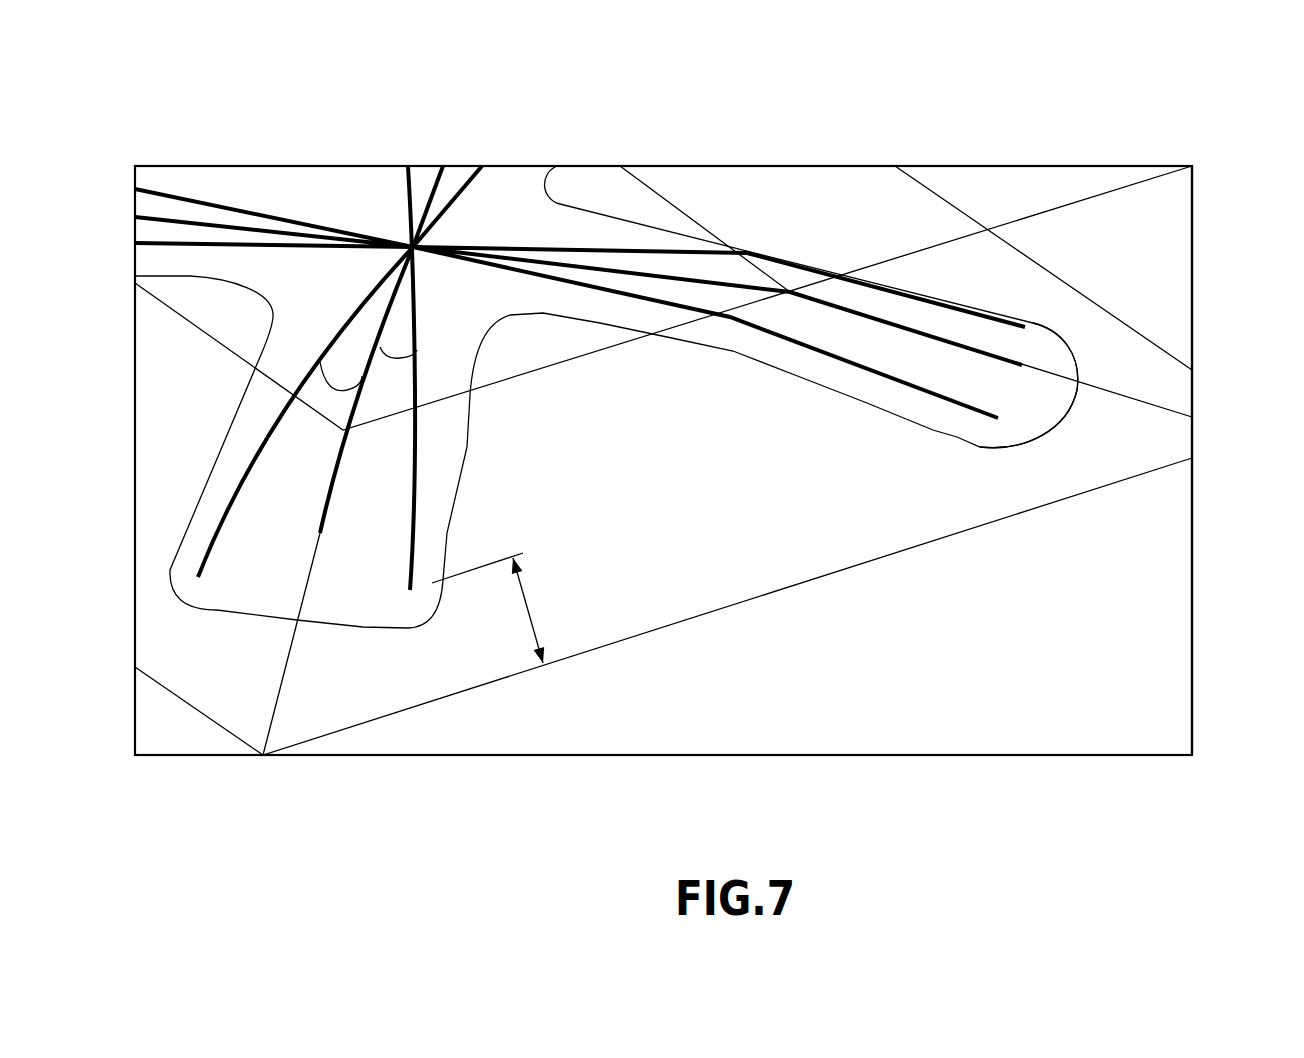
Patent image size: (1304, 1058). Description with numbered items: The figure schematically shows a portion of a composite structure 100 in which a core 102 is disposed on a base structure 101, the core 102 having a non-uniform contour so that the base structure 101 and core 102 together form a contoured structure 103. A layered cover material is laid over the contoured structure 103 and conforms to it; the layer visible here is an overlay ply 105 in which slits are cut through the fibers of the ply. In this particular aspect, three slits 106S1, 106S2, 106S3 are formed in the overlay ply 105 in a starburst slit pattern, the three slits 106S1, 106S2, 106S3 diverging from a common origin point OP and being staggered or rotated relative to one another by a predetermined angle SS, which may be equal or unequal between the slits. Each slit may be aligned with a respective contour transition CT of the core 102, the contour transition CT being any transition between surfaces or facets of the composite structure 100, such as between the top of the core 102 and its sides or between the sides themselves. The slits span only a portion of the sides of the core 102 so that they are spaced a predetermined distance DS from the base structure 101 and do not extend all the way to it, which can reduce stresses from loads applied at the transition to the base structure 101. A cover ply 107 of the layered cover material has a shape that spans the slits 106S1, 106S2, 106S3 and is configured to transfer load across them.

The composite structure 100 is at (1095, 83).
The base structure 101 is at (1175, 225).
The core 102 is at (1088, 493).
The contoured structure 103 is at (1018, 780).
The overlay ply 105 is at (860, 193).
The cover ply 107 is at (1063, 403).
The first slit 106S1 is at (222, 528).
The second slit 106S2 is at (320, 533).
The third slit 106S3 is at (407, 553).
The predetermined angle SS is at (335, 370).
The common origin point OP is at (413, 247).
The contour transition CT is at (585, 357).
The predetermined distance DS is at (528, 612).